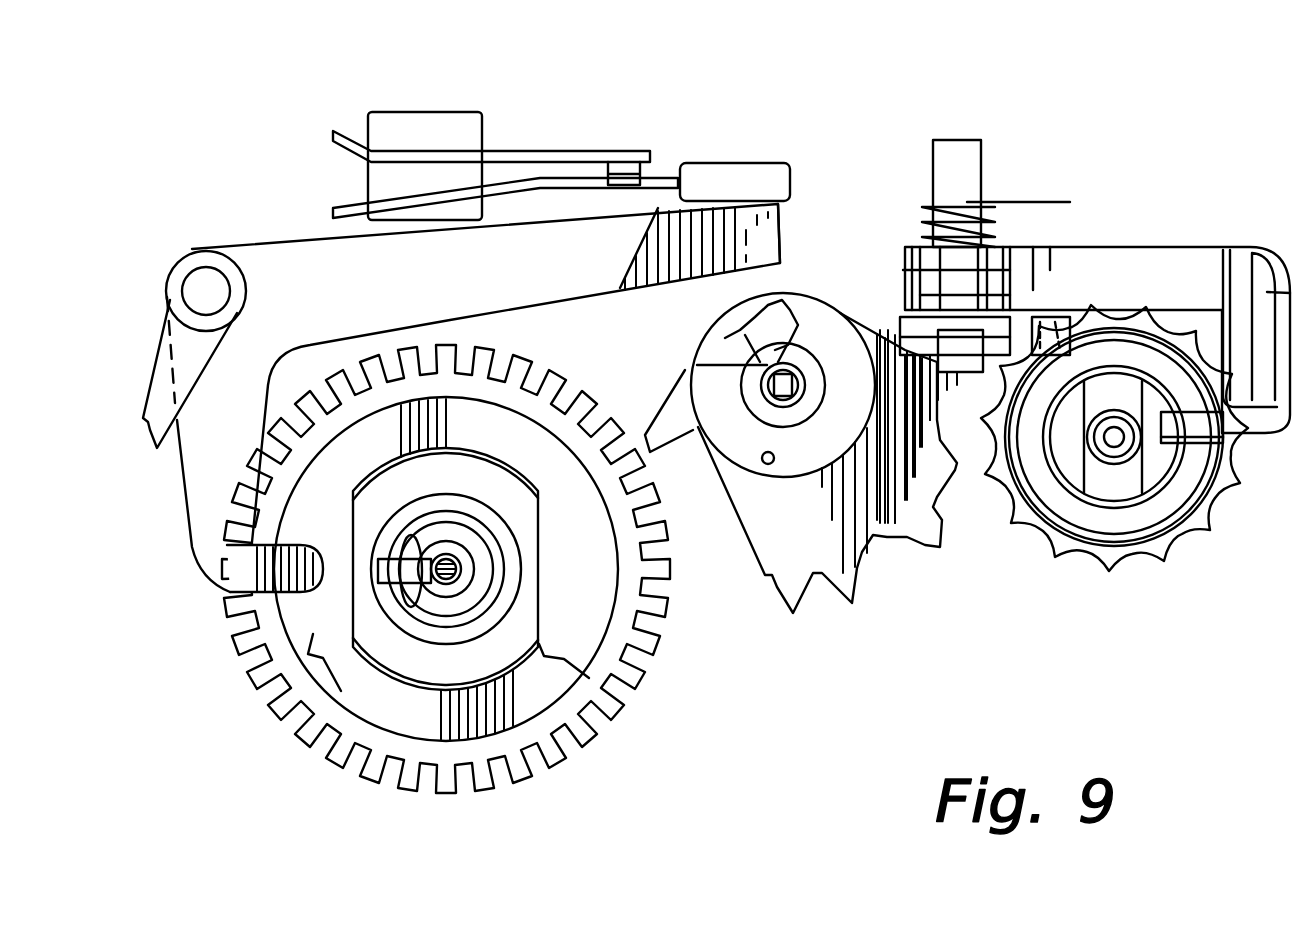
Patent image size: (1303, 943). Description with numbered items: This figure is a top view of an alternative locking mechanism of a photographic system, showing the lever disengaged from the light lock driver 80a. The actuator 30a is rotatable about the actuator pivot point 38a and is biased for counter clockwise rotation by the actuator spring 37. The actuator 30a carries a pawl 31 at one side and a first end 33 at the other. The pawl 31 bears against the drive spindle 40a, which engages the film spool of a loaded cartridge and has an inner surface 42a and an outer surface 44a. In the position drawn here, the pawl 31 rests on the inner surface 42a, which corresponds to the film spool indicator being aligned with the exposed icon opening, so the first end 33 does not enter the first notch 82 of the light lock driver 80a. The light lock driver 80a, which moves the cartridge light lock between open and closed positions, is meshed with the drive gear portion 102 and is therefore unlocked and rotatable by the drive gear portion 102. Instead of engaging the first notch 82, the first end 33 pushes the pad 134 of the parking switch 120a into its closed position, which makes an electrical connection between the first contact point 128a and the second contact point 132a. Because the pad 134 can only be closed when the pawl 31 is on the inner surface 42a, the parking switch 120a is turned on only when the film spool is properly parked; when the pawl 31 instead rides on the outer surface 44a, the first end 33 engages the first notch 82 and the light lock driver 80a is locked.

The parking switch 120a is at (612, 110).
The actuator 30a is at (303, 238).
The first end 33 is at (777, 237).
The actuator pivot point 38a is at (208, 292).
The actuator spring 37 is at (150, 380).
The pawl 31 is at (280, 592).
The outer surface 44a is at (507, 730).
The drive spindle 40a is at (607, 683).
The inner surface 42a is at (318, 645).
The second contact point 132a is at (333, 132).
The first contact point 128a is at (333, 208).
The pad 134 is at (763, 178).
The light lock driver 80a is at (905, 545).
The first notch 82 is at (784, 355).
The drive gear portion 102 is at (1120, 550).